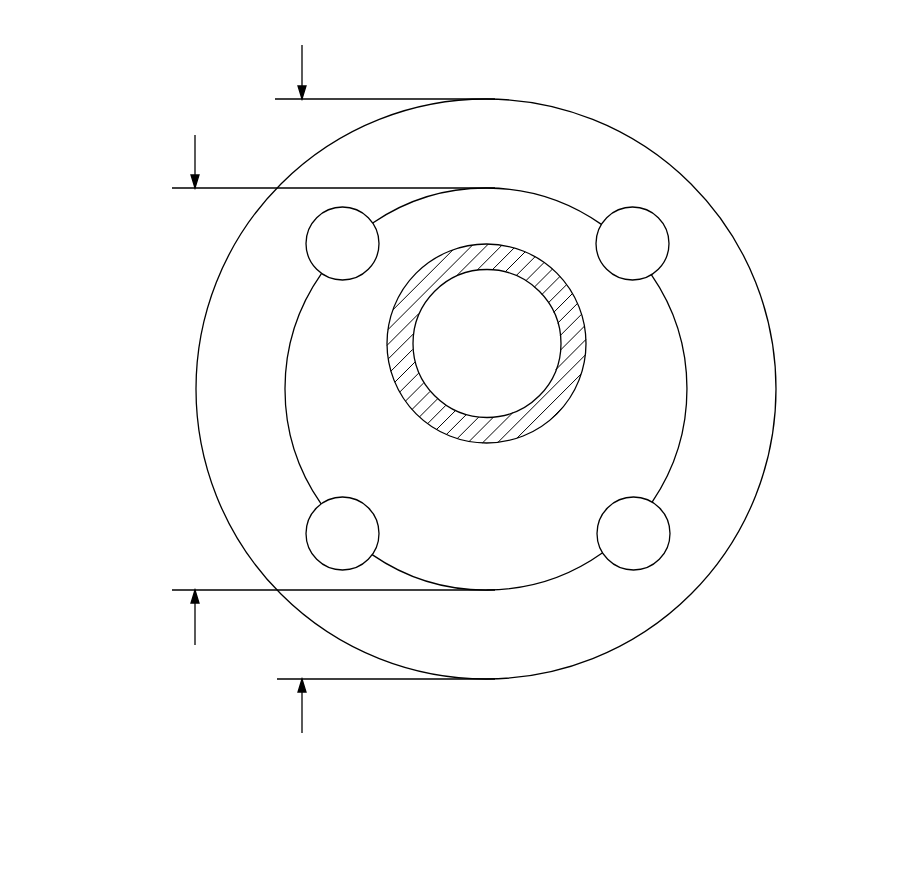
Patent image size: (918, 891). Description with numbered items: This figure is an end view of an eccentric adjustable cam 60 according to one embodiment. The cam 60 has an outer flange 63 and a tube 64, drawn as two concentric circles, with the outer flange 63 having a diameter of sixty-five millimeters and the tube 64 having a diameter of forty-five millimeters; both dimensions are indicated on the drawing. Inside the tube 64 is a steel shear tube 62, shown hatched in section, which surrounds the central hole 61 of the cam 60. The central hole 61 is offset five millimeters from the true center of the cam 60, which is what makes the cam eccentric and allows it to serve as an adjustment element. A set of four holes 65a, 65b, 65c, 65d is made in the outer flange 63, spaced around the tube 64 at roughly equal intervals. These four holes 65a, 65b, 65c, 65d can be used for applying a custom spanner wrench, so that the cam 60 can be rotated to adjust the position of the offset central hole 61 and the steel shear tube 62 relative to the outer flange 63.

The adjustable cam 60 is at (139, 96).
The central hole 61 is at (452, 385).
The steel shear tube 62 is at (397, 332).
The outer flange 63 is at (205, 382).
The tube 64 is at (537, 218).
The hole 65a is at (310, 260).
The hole 65b is at (648, 212).
The hole 65c is at (658, 562).
The hole 65d is at (308, 520).